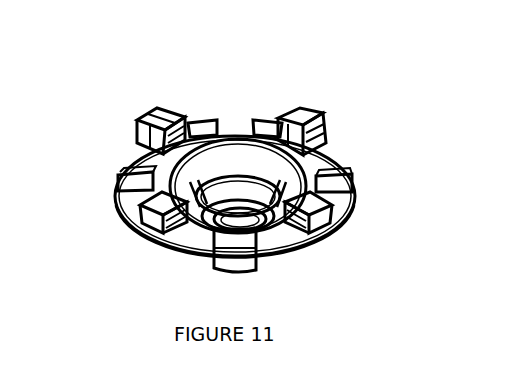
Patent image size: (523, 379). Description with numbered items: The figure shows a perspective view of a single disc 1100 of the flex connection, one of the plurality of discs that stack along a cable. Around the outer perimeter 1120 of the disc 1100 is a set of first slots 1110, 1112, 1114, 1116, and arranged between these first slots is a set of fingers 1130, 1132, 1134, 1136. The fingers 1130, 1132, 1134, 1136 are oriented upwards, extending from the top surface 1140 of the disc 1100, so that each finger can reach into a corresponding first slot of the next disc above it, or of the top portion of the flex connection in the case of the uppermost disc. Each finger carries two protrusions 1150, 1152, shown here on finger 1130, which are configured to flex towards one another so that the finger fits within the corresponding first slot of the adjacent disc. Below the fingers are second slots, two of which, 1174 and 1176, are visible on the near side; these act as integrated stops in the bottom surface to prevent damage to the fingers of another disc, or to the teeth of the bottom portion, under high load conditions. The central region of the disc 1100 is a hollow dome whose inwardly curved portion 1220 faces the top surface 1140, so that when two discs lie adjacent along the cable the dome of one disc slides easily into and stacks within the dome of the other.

The disc 1100 is at (102, 45).
The first slot 1110 is at (121, 191).
The first slot 1112 is at (235, 123).
The first slot 1114 is at (352, 192).
The first slot 1116 is at (236, 258).
The outer perimeter 1120 is at (350, 160).
The finger 1130 is at (153, 108).
The finger 1132 is at (312, 108).
The finger 1134 is at (334, 200).
The finger 1136 is at (140, 208).
The top surface 1140 is at (130, 162).
The protrusion 1150 is at (137, 122).
The protrusion 1152 is at (165, 103).
The second slot 1174 is at (317, 240).
The second slot 1176 is at (136, 234).
The inwardly curved portion of the dome 1220 is at (227, 158).